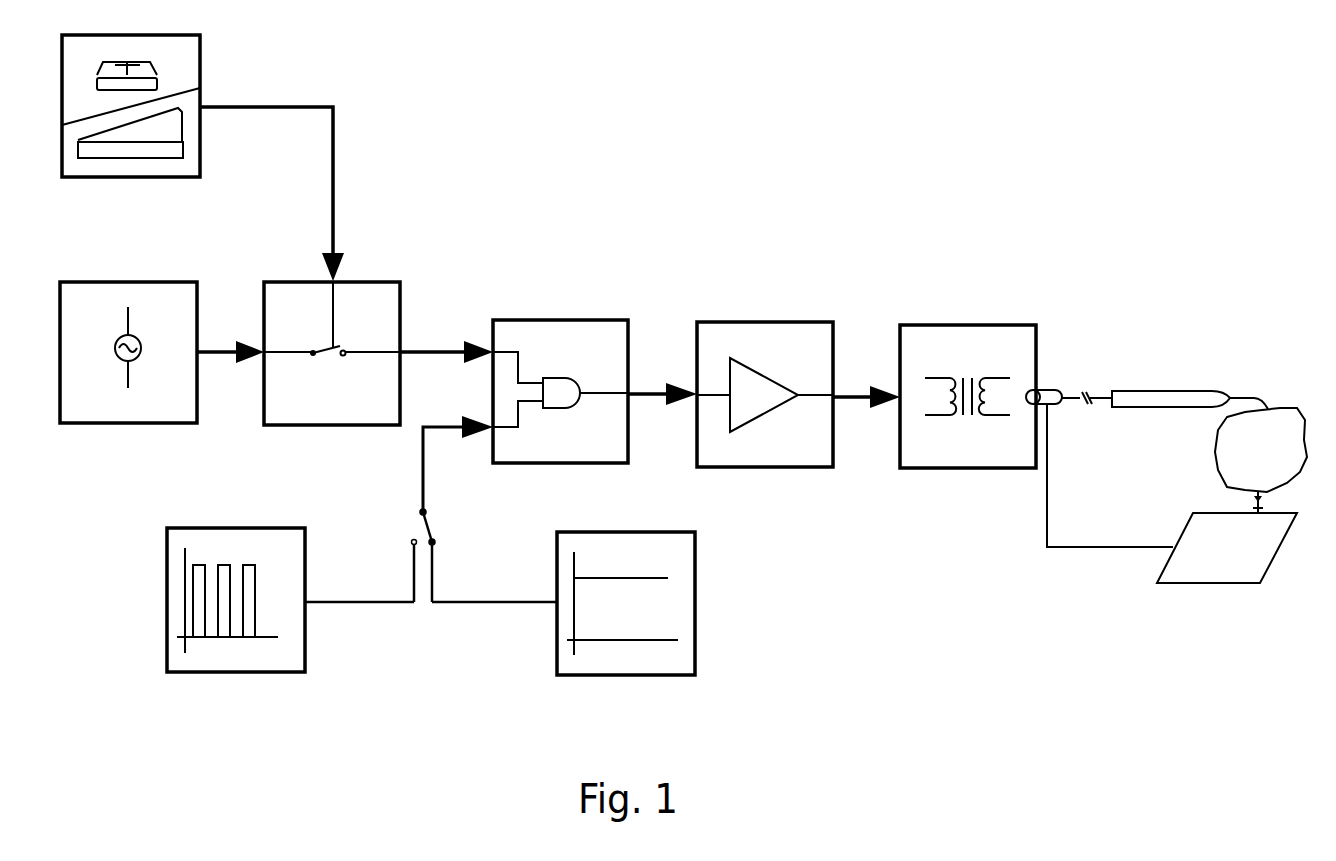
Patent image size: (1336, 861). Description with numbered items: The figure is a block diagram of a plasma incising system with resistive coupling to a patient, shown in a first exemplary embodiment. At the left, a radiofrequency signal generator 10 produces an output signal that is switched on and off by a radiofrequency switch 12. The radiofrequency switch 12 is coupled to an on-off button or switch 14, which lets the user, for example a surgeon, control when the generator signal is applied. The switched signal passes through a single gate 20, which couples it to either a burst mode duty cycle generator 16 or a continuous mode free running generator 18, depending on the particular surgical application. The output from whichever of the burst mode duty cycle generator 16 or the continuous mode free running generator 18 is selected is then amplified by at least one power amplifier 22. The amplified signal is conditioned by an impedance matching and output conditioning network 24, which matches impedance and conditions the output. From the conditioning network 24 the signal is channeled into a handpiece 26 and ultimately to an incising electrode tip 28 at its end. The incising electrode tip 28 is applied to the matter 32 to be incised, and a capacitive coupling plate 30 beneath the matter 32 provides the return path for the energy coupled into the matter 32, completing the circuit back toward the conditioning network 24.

The radiofrequency signal generator 10 is at (165, 280).
The radiofrequency switch 12 is at (368, 282).
The on-off button or switch 14 is at (192, 75).
The burst mode duty cycle generator 16 is at (275, 528).
The continuous mode free running generator 18 is at (663, 532).
The gate 20 is at (597, 320).
The power amplifier 22 is at (802, 322).
The impedance matching and output conditioning network 24 is at (1005, 323).
The handpiece 26 is at (1197, 398).
The incising electrode tip 28 is at (1245, 388).
The capacitive coupling plate 30 is at (1185, 563).
The matter to be incised 32 is at (1257, 453).